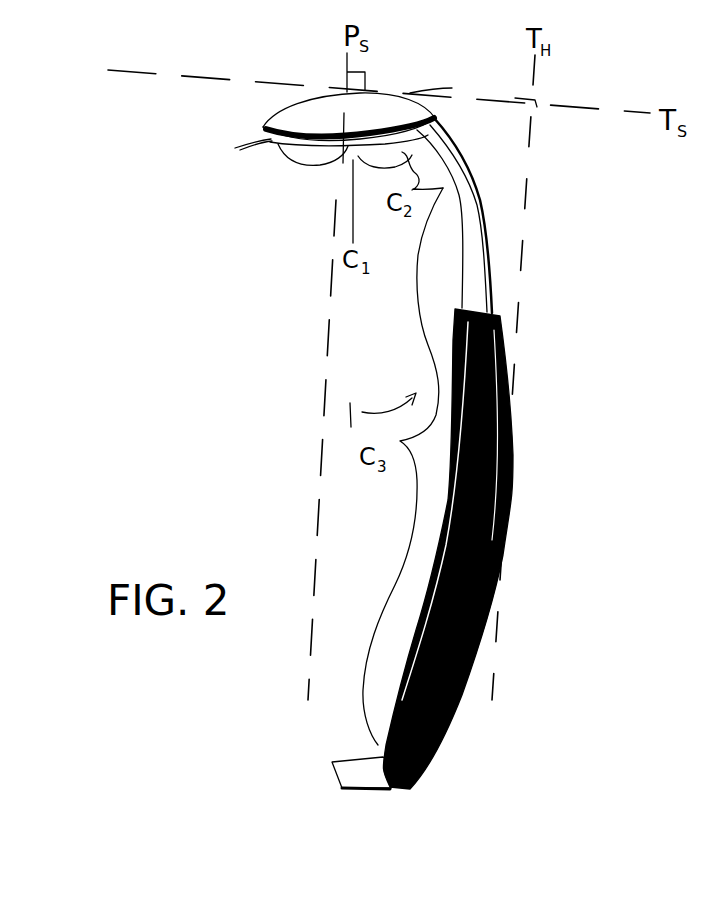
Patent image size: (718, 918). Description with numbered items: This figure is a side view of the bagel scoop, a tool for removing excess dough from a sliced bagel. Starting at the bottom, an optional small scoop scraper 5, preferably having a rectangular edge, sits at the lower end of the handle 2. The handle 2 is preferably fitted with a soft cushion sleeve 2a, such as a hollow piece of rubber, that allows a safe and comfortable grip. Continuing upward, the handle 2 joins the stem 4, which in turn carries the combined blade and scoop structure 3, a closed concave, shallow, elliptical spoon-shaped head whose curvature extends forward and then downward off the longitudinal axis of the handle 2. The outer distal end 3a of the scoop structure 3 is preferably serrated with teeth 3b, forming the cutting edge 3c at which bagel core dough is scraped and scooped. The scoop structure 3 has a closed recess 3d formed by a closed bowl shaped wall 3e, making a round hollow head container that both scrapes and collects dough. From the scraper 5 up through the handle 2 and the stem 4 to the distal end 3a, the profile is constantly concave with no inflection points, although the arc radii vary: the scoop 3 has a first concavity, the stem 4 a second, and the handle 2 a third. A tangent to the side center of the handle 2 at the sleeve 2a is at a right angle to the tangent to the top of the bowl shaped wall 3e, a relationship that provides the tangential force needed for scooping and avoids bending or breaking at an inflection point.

The handle 2 is at (458, 476).
The soft cushion sleeve 2a is at (510, 450).
The combined blade and scoop structure 3 is at (321, 168).
The outer distal end 3a is at (240, 150).
The teeth 3b is at (235, 148).
The cutting edge 3c is at (265, 128).
The closed recess 3d is at (343, 183).
The closed bowl shaped wall 3e is at (452, 88).
The stem 4 is at (476, 206).
The small scoop scraper 5 is at (387, 787).